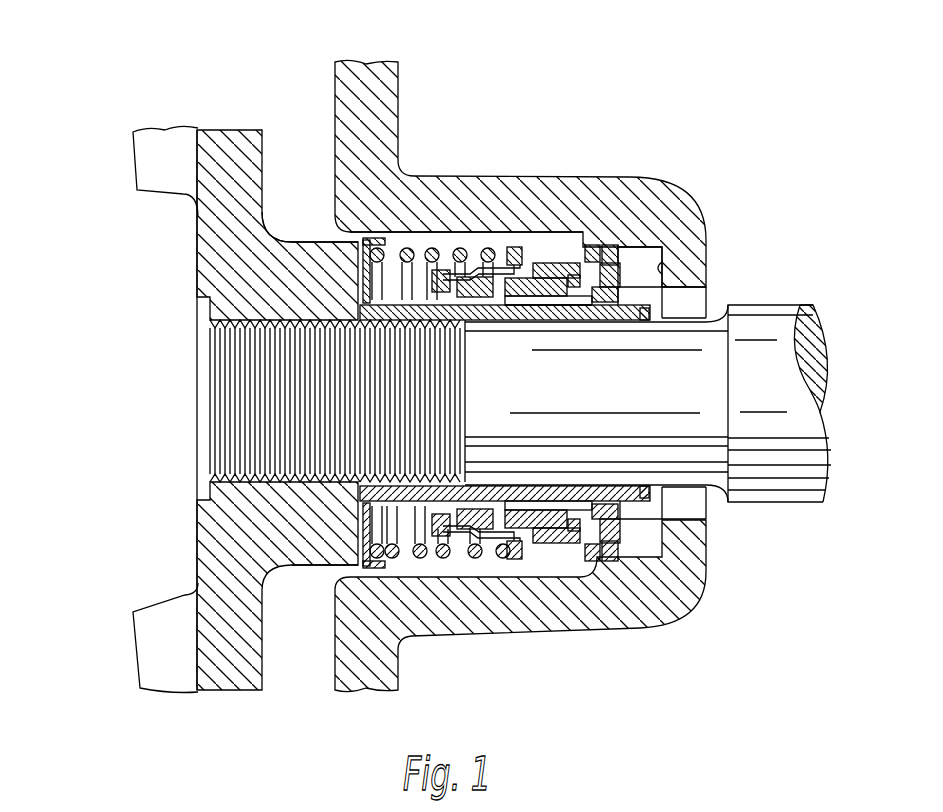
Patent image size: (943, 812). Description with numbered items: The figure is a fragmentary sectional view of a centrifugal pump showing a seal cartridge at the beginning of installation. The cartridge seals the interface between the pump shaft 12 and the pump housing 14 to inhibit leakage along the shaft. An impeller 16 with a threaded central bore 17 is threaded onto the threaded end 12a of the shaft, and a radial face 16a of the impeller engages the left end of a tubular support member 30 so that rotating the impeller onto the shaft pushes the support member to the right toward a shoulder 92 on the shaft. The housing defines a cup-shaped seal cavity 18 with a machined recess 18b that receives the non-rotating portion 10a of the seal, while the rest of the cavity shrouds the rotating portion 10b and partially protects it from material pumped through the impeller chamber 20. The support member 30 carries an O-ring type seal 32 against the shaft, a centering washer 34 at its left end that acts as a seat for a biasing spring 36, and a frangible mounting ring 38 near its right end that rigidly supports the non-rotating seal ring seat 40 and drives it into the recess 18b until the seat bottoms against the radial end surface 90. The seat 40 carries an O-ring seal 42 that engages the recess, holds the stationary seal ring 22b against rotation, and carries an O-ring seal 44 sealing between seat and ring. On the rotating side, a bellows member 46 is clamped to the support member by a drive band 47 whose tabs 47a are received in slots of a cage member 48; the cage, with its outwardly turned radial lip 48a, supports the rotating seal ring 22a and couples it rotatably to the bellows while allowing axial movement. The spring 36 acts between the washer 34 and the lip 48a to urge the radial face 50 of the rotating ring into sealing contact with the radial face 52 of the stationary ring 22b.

The non-rotating portion of the shaft seal 10a is at (575, 237).
The rotating portion of the shaft seal 10b is at (455, 226).
The pump shaft 12 is at (619, 403).
The threaded end of the pump shaft 12a is at (382, 414).
The pump housing 14 is at (567, 150).
The impeller 16 is at (303, 289).
The radial face of the impeller 16a is at (345, 237).
The threaded central bore 17 is at (248, 421).
The seal cavity 18 is at (584, 228).
The machined recess 18b is at (660, 250).
The impeller chamber 20 is at (294, 98).
The rotating seal ring 22a is at (525, 320).
The stationary seal ring 22b is at (560, 305).
The tubular support member 30 is at (484, 484).
The O-ring type seal 32 is at (645, 322).
The centering washer 34 is at (360, 568).
The biasing spring 36 is at (427, 560).
The frangible mounting ring 38 is at (613, 514).
The non-rotating seal ring seat 40 is at (585, 278).
The O-ring seal 42 is at (600, 257).
The O-ring seal 44 is at (590, 298).
The bellows member 46 is at (482, 320).
The drive band 47 is at (472, 262).
The tabs 47a is at (446, 262).
The cage member 48 is at (500, 562).
The radial lip 48a is at (522, 247).
The radial face of the rotating seal ring 50 is at (528, 500).
The radial face of the stationary seal ring 52 is at (533, 532).
The radial end surface 90 is at (662, 272).
The shoulder 92 is at (727, 397).